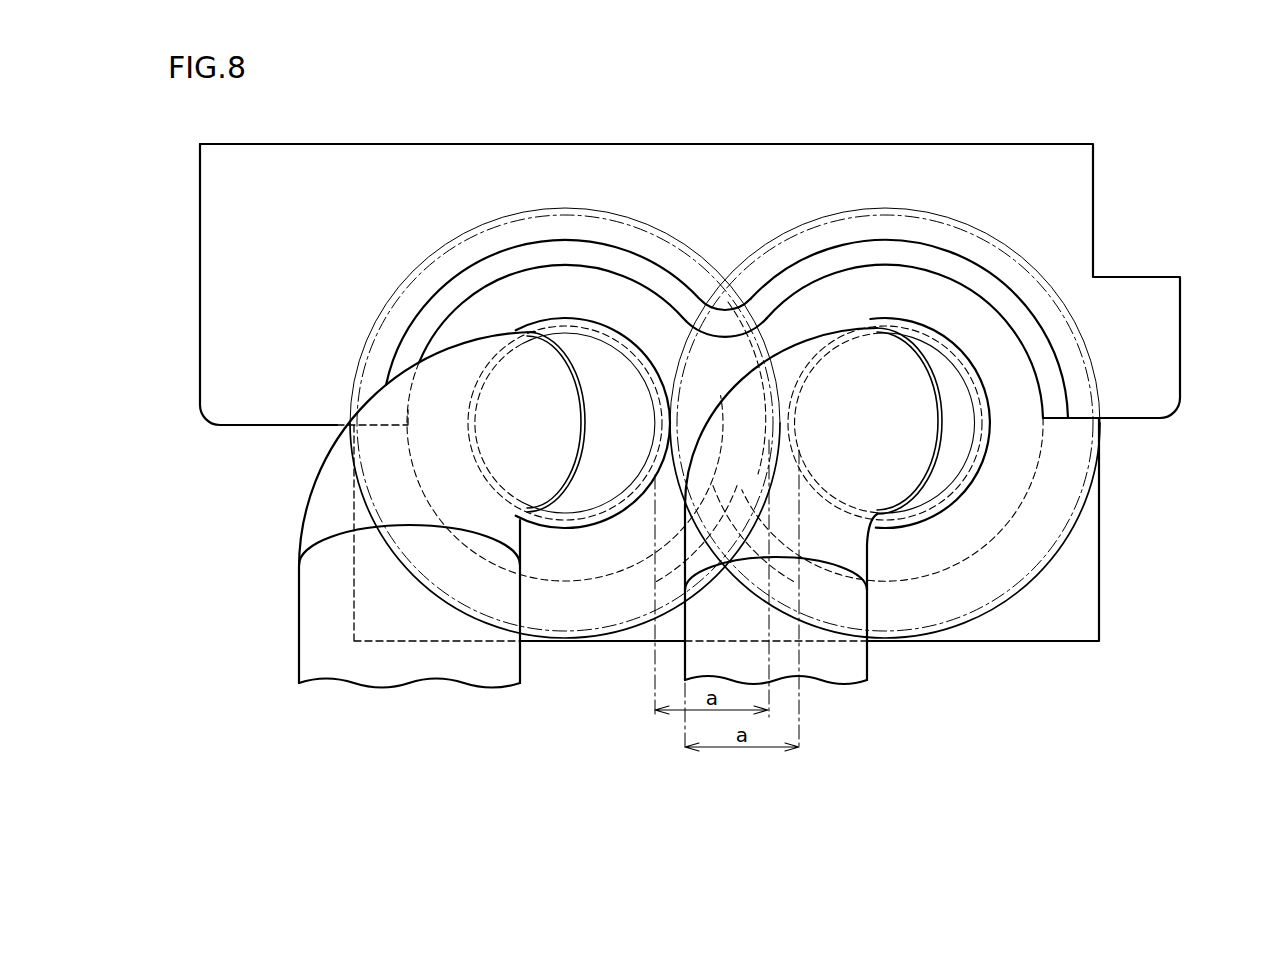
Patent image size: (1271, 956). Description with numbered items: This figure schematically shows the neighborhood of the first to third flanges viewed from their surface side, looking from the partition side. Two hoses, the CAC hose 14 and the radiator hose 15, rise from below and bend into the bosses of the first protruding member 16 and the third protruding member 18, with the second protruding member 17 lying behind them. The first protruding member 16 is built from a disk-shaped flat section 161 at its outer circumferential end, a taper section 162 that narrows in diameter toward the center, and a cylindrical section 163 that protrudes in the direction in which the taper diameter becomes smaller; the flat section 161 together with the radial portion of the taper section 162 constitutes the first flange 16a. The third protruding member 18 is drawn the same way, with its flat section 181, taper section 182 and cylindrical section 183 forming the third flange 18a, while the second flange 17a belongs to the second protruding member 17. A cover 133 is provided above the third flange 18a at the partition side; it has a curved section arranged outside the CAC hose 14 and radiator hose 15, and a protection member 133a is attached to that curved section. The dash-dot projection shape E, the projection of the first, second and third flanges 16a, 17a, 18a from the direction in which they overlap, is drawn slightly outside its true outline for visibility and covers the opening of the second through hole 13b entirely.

The cover 133 is at (1062, 182).
The protection member 133a is at (1048, 377).
The projection shape E is at (455, 235).
The second protruding member 17 is at (565, 635).
The second flange 17a is at (612, 630).
The first protruding member 16 is at (530, 292).
The first flange 16a is at (562, 288).
The flat section 161 is at (588, 290).
The taper section 162 is at (620, 332).
The cylindrical section 163 is at (643, 348).
The third protruding member 18 is at (855, 292).
The third flange 18a is at (888, 288).
The flat section 181 is at (915, 287).
The taper section 182 is at (945, 327).
The cylindrical section 183 is at (968, 342).
The second through hole 13b is at (985, 545).
The CAC hose 14 is at (408, 657).
The radiator hose 15 is at (853, 662).